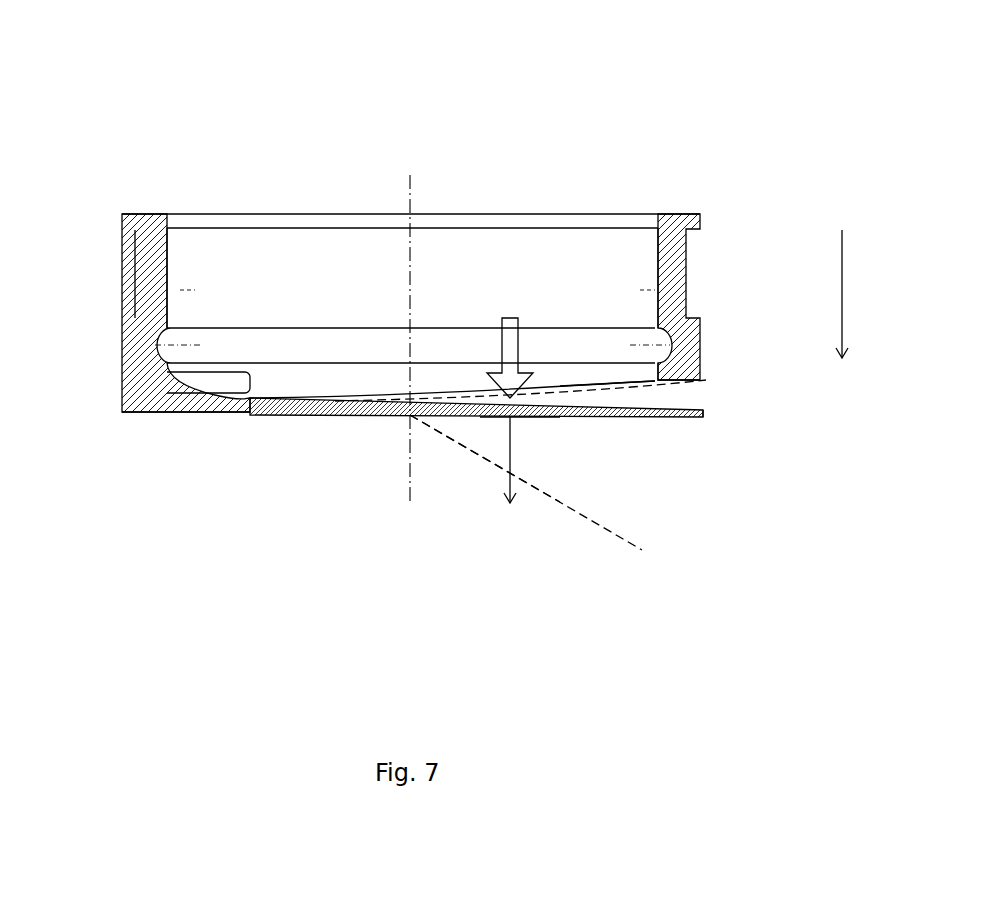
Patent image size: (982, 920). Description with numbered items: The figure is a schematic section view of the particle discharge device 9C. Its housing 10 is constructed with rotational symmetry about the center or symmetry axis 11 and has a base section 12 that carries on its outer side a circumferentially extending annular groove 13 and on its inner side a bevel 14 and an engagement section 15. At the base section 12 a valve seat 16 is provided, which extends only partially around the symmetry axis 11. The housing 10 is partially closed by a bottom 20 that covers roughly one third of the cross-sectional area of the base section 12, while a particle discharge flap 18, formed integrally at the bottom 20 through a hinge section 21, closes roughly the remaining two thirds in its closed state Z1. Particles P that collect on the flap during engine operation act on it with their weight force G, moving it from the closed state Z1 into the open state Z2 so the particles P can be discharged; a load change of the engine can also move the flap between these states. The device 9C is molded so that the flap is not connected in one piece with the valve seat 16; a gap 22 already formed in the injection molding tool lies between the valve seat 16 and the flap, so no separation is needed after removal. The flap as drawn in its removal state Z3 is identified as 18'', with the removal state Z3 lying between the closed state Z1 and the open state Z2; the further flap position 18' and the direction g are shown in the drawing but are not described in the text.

The particle discharge device 9C is at (357, 88).
The housing 10 is at (198, 206).
The symmetry axis 11 is at (412, 188).
The base section 12 is at (169, 263).
The annular groove 13 is at (134, 273).
The bevel 14 is at (658, 214).
The engagement section 15 is at (124, 345).
The valve seat 16 is at (683, 367).
The particle discharge flap 18 is at (476, 434).
The deflected bottom plate position 18' is at (533, 522).
The particle discharge flap in removal state 18'' is at (508, 498).
The bottom 20 is at (215, 412).
The hinge section 21 is at (243, 412).
The gap 22 is at (658, 397).
The closed state Z1 is at (577, 370).
The open state Z2 is at (517, 543).
The removal state Z3 is at (712, 415).
The particles P is at (500, 318).
The weight force G is at (500, 460).
The gravity direction g is at (851, 294).